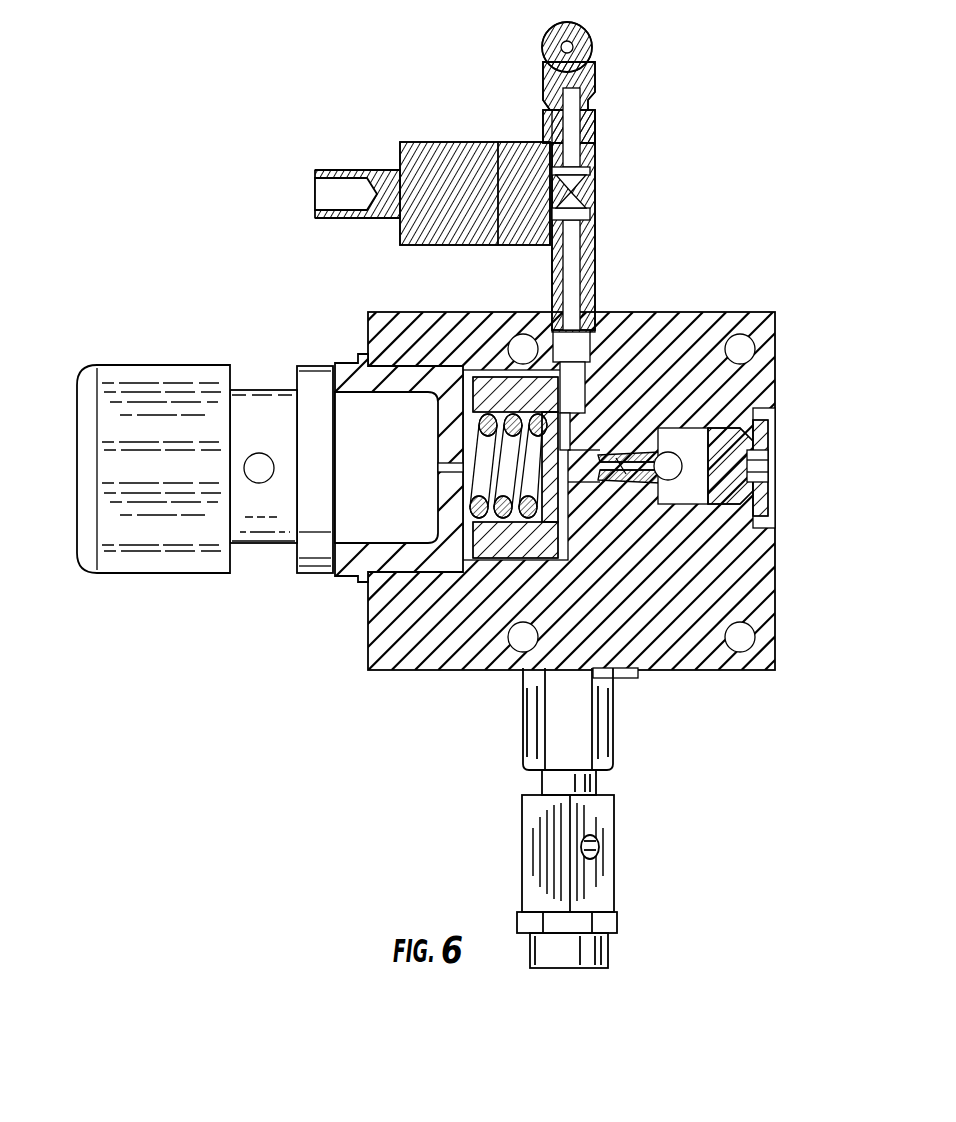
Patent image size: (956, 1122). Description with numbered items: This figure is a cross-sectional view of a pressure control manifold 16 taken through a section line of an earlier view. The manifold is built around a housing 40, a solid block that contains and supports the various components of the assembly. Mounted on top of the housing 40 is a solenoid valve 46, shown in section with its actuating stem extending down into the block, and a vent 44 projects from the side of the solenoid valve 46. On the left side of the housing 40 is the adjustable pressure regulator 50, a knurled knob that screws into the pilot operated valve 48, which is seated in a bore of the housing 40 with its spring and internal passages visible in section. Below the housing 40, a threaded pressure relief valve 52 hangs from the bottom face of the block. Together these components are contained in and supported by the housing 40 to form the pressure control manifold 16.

The pressure control manifold 16 is at (162, 121).
The housing 40 is at (777, 608).
The vent 44 is at (318, 193).
The solenoid valve 46 is at (460, 142).
The pilot operated valve 48 is at (350, 578).
The adjustable pressure regulator 50 is at (74, 411).
The pressure relief valve 52 is at (612, 848).